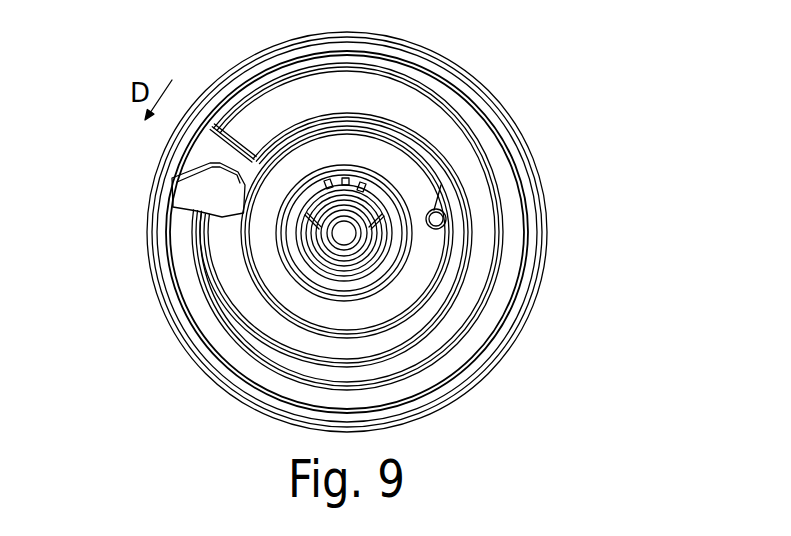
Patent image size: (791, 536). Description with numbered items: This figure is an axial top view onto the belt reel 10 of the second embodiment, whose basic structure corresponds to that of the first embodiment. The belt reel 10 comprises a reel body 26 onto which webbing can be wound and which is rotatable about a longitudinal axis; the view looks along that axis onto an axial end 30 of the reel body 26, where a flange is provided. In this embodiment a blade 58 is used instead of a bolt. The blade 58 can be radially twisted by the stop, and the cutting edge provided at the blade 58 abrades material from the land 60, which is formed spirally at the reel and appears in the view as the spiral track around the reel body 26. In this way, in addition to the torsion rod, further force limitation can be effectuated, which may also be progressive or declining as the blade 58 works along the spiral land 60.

The belt reel 10 is at (551, 70).
The reel body 26 is at (543, 188).
The axial end 30 is at (487, 253).
The blade 58 is at (193, 197).
The land 60 is at (392, 97).